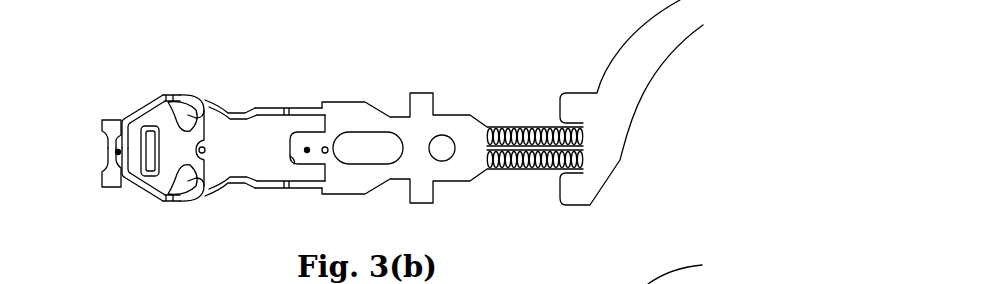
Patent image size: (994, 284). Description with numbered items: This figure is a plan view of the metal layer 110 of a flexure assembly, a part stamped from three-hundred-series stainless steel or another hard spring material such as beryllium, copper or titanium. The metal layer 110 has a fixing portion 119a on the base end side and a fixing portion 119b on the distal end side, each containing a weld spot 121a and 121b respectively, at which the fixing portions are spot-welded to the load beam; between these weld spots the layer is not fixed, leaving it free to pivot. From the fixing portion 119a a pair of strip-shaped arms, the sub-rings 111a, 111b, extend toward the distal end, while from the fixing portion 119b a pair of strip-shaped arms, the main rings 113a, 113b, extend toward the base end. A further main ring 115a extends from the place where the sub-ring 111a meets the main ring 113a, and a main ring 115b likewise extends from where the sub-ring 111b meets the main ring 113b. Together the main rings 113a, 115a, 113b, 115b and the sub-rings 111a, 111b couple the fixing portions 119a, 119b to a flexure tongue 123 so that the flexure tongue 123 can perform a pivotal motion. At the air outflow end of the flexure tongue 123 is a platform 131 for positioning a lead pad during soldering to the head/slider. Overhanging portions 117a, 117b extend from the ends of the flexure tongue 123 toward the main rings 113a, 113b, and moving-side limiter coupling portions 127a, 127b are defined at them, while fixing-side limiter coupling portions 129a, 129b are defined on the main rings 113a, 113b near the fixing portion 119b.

The metal layer 110 is at (330, 82).
The sub-ring 111a is at (256, 107).
The sub-ring 111b is at (256, 190).
The main ring 113a is at (142, 106).
The main ring 113b is at (140, 192).
The main ring 115a is at (212, 99).
The main ring 115b is at (211, 198).
The overhanging portion 117a is at (180, 94).
The overhanging portion 117b is at (180, 203).
The fixing portion 119a is at (293, 160).
The fixing portion 119b is at (104, 168).
The weld spot 121a is at (306, 149).
The weld spot 121b is at (116, 151).
The flexure tongue 123 is at (192, 142).
The moving-side limiter coupling portion 127a is at (163, 95).
The moving-side limiter coupling portion 127b is at (163, 201).
The fixing-side limiter coupling portion 129a is at (120, 125).
The fixing-side limiter coupling portion 129b is at (118, 185).
The platform 131 is at (163, 149).